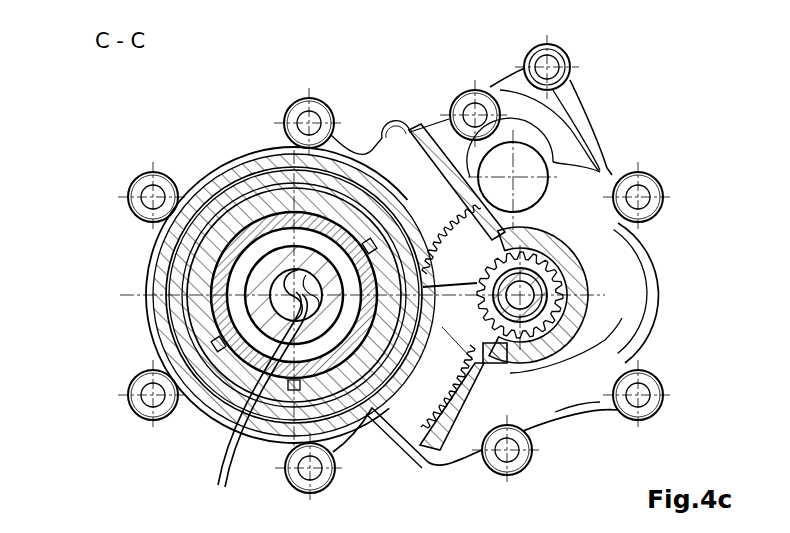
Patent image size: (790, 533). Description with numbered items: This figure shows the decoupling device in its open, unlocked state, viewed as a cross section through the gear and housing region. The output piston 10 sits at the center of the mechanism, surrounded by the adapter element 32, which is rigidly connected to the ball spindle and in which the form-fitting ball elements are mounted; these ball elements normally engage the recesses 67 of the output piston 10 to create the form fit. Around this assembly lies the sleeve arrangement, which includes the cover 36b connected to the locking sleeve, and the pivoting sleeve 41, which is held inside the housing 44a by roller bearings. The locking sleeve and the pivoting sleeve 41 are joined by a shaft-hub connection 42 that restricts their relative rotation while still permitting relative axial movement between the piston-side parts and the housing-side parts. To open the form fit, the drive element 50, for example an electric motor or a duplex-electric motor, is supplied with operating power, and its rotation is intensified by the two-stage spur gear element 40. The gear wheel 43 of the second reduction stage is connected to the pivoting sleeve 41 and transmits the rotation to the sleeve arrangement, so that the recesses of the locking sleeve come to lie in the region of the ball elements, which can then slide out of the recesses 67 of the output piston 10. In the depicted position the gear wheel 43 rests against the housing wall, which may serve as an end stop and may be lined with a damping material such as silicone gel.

The output piston 10 is at (152, 224).
The adapter element 32 is at (128, 195).
The gear element 40 is at (622, 268).
The pivoting sleeve 41 is at (228, 416).
The shaft-hub connection 42 is at (200, 267).
The gear wheel 43 is at (485, 418).
The housing 44a is at (233, 152).
The drive element 50 is at (608, 130).
The recesses 67 is at (259, 403).
The cover 36b is at (426, 460).